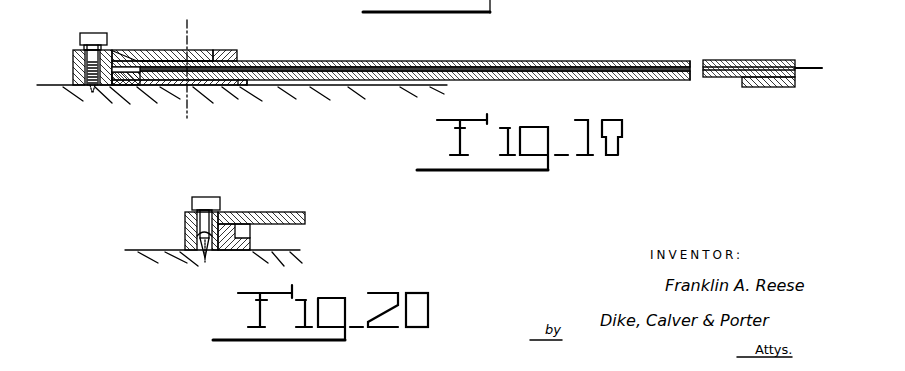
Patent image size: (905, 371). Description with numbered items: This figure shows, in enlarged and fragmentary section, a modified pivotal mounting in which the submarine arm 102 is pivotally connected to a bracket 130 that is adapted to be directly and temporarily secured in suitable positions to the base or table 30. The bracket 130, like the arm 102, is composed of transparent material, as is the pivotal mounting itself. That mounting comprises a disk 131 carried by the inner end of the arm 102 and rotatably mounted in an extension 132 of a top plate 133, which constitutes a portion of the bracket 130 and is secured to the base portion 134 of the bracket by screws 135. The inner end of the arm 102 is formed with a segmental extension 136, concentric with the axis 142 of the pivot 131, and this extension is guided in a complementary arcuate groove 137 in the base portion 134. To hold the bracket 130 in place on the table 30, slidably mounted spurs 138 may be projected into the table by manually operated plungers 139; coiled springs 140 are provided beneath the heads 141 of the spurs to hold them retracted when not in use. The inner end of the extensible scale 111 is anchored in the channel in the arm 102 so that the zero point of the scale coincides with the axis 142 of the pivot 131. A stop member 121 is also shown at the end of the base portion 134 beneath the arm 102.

In FIG. 18, the table 30 is at (380, 90).
In FIG. 20, the table 30 is at (300, 252).
In FIG. 18, the submarine arm 102 is at (587, 57).
In FIG. 18, the extensible scale 111 is at (512, 68).
In FIG. 18, the stop block 121 is at (245, 88).
In FIG. 18, the bracket 130 is at (69, 73).
In FIG. 20, the bracket 130 is at (179, 229).
In FIG. 18, the disk 131 is at (192, 52).
In FIG. 18, the extension 132 is at (226, 51).
In FIG. 18, the top plate 133 is at (113, 52).
In FIG. 20, the top plate 133 is at (255, 215).
In FIG. 18, the base portion 134 is at (118, 83).
In FIG. 20, the base portion 134 is at (228, 242).
In FIG. 18, the screws 135 is at (93, 46).
In FIG. 18, the segmental extension 136 is at (128, 64).
In FIG. 20, the arcuate groove 137 is at (242, 231).
In FIG. 18, the spurs 138 is at (95, 90).
In FIG. 20, the spurs 138 is at (206, 252).
In FIG. 18, the plungers 139 is at (80, 38).
In FIG. 20, the plungers 139 is at (210, 200).
In FIG. 20, the coiled springs 140 is at (204, 257).
In FIG. 20, the heads 141 is at (199, 236).
In FIG. 18, the axis 142 is at (187, 108).